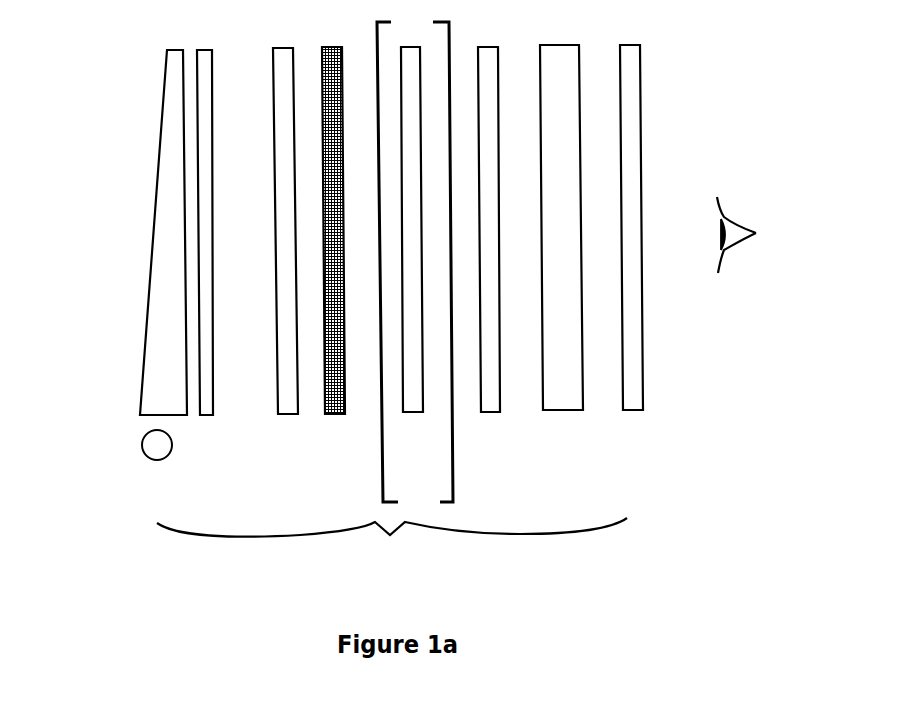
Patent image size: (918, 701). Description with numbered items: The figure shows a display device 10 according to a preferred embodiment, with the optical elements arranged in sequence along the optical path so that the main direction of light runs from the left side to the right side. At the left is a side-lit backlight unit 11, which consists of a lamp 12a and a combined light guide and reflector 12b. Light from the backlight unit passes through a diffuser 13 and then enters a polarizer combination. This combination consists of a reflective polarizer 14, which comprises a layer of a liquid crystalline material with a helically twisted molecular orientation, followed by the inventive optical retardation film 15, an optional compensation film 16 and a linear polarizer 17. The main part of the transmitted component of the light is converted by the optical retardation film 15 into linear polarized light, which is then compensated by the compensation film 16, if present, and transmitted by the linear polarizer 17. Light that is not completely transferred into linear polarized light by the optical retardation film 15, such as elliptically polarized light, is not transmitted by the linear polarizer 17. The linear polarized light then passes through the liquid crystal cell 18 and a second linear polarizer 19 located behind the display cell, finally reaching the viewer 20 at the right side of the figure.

The display device 10 is at (392, 549).
The side-lit backlight unit 11 is at (163, 275).
The lamp 12a is at (140, 448).
The combined light guide and reflector 12b is at (151, 160).
The diffuser 13 is at (212, 275).
The reflective polarizer 14 is at (281, 274).
The optical retardation film 15 is at (335, 274).
The compensation film 16 is at (415, 262).
The linear polarizer 17 is at (490, 274).
The liquid crystal cell 18 is at (563, 273).
The second linear polarizer 19 is at (633, 273).
The viewer 20 is at (745, 345).